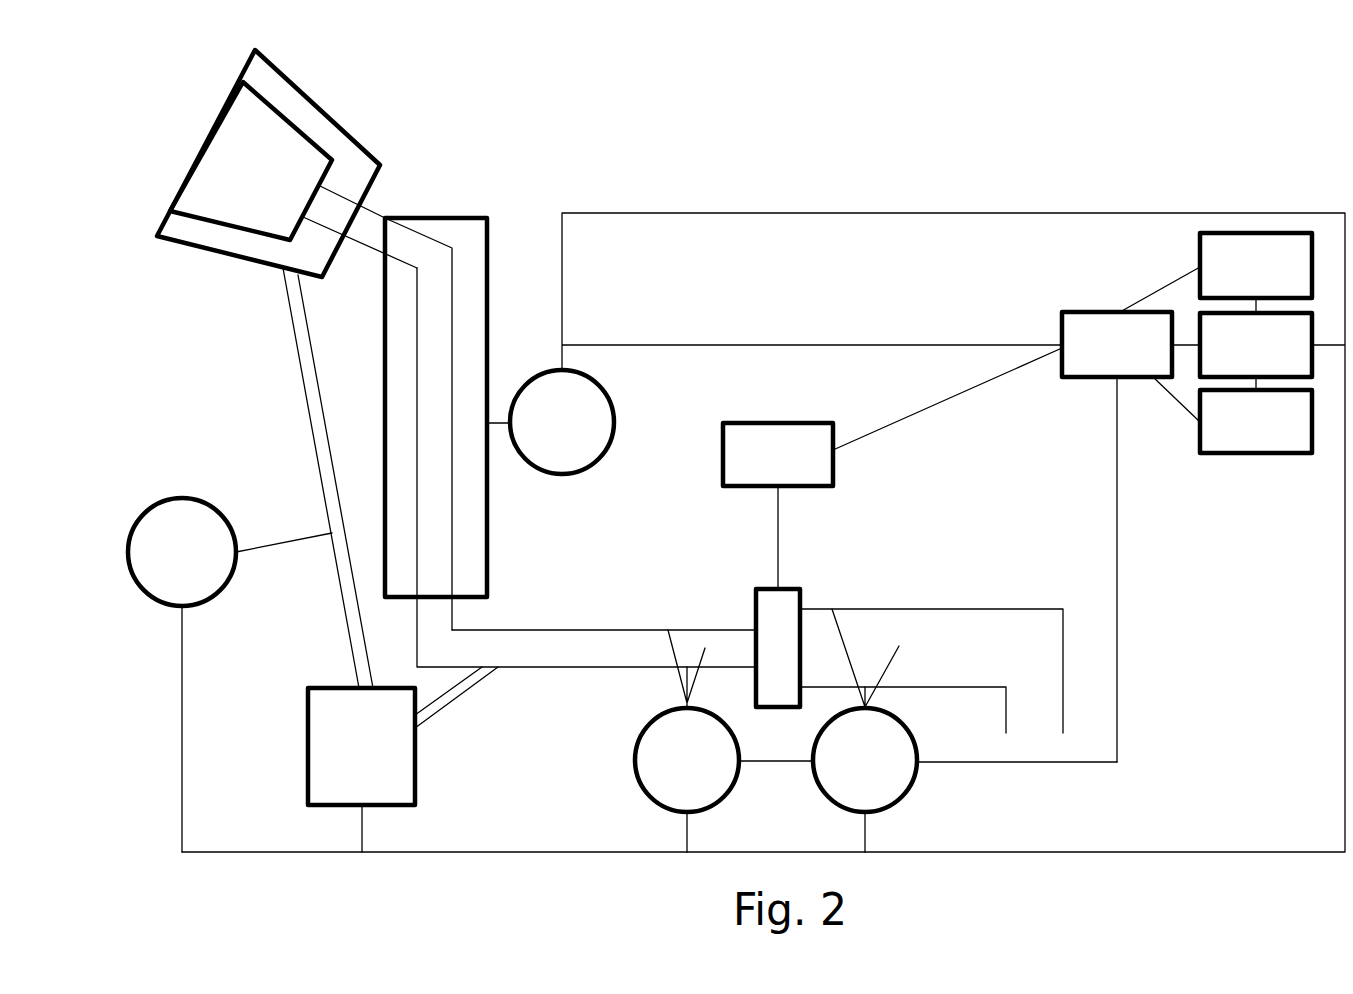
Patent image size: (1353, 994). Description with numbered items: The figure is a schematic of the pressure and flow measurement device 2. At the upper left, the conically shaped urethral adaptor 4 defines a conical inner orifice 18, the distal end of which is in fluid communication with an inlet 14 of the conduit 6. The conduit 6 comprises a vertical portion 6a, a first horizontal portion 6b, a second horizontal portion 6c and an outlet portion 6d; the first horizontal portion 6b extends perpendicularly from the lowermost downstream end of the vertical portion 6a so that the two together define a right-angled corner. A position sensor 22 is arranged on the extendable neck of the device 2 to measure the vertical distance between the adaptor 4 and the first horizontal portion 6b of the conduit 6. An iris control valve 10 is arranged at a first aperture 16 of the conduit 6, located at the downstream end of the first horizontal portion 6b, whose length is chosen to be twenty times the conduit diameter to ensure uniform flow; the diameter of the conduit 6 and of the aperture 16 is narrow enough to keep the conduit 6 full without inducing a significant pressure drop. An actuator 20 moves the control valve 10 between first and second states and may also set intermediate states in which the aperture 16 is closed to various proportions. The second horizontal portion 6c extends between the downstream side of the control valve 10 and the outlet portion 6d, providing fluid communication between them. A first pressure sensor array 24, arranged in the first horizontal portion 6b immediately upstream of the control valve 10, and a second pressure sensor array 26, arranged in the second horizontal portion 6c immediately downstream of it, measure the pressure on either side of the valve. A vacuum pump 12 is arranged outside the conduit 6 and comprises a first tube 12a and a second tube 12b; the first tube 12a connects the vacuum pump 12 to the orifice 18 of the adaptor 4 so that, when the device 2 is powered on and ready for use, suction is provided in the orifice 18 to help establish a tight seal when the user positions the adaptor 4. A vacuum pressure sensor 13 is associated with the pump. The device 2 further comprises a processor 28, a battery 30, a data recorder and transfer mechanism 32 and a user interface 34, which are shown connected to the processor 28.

The pressure and flow measurement device 2 is at (893, 134).
The urethral adaptor 4 is at (358, 96).
The conduit 6 is at (702, 429).
The vertical portion 6a is at (442, 343).
The first horizontal portion 6b is at (577, 655).
The second horizontal portion 6c is at (885, 626).
The outlet portion 6d is at (1037, 725).
The iris control valve 10 is at (769, 610).
The vacuum pump 12 is at (346, 762).
The first tube 12a is at (323, 456).
The second tube 12b is at (440, 707).
The vacuum pressure sensor 13 is at (230, 675).
The inlet 14 is at (337, 185).
The first aperture 16 is at (755, 646).
The conical inner orifice 18 is at (248, 193).
The actuator 20 is at (762, 469).
The position sensor 22 is at (546, 441).
The first pressure sensor array 24 is at (671, 779).
The second pressure sensor array 26 is at (849, 779).
The processor 28 is at (1101, 360).
The battery 30 is at (1240, 360).
The data recorder and transfer mechanism 32 is at (1240, 437).
The user interface 34 is at (1240, 281).